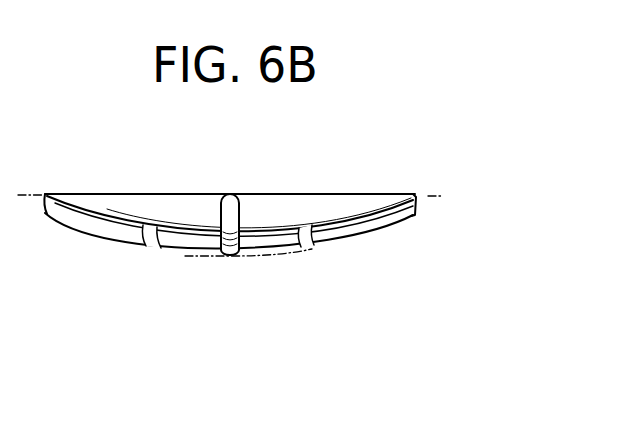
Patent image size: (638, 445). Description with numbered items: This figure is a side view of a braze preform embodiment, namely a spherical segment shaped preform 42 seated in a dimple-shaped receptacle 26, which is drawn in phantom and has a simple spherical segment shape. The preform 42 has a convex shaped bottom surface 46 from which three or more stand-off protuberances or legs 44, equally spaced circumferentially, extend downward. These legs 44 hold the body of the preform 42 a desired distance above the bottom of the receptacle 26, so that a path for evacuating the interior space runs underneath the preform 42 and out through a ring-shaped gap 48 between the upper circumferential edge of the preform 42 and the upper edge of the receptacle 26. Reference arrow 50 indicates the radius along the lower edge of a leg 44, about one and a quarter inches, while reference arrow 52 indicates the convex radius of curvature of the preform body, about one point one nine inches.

The dimple-shaped receptacle 26 is at (262, 257).
The spherical segment shaped preform 42 is at (124, 192).
The stand-off protuberances or legs 44 is at (255, 193).
The convex shaped bottom surface 46 is at (183, 249).
The ring-shaped gap 48 is at (417, 214).
The reference arrow for lower edge radius 50 is at (229, 263).
The reference arrow for convex radius of curvature 52 is at (317, 216).